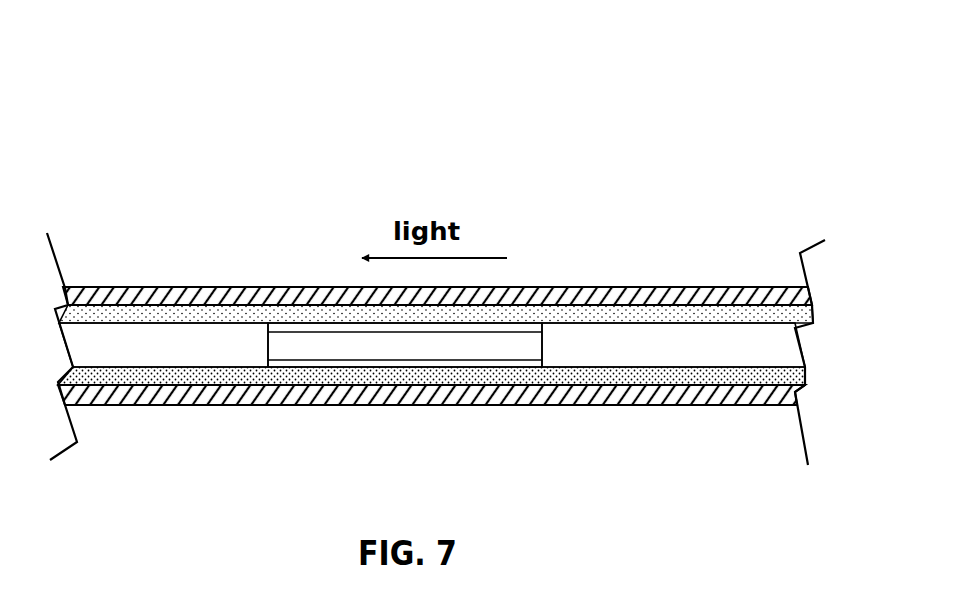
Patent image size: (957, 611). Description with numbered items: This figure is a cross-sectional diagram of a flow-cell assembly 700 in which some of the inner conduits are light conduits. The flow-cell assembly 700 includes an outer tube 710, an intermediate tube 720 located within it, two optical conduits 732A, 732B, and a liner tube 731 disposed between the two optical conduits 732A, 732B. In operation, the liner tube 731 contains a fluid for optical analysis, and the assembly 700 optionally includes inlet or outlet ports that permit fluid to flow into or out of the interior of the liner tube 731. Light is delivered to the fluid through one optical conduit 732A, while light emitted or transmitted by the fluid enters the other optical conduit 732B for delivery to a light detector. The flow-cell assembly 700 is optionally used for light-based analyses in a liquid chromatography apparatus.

The flow-cell assembly 700 is at (246, 120).
The outer tube 710 is at (690, 285).
The intermediate tube 720 is at (802, 373).
The liner tube 731 is at (360, 358).
The optical conduit 732A is at (697, 358).
The optical conduit 732B is at (197, 359).